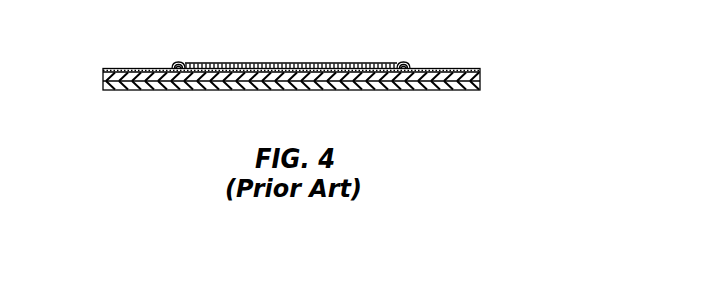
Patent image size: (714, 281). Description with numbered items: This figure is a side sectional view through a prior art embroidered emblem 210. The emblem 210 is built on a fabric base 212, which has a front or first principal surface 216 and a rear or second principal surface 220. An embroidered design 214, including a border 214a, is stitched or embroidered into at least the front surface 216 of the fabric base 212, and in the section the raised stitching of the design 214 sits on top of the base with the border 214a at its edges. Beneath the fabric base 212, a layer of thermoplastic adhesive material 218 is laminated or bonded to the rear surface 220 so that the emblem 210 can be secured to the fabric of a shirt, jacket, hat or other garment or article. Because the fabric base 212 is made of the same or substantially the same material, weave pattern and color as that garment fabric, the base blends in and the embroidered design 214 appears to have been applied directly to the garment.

The embroidered emblem 210 is at (308, 69).
The fabric base 212 is at (481, 74).
The embroidered design 214 is at (322, 63).
The border 214a is at (142, 68).
The front or first principal surface 216 is at (442, 68).
The layer of thermoplastic adhesive material 218 is at (481, 87).
The rear or second principal surface 220 is at (424, 78).